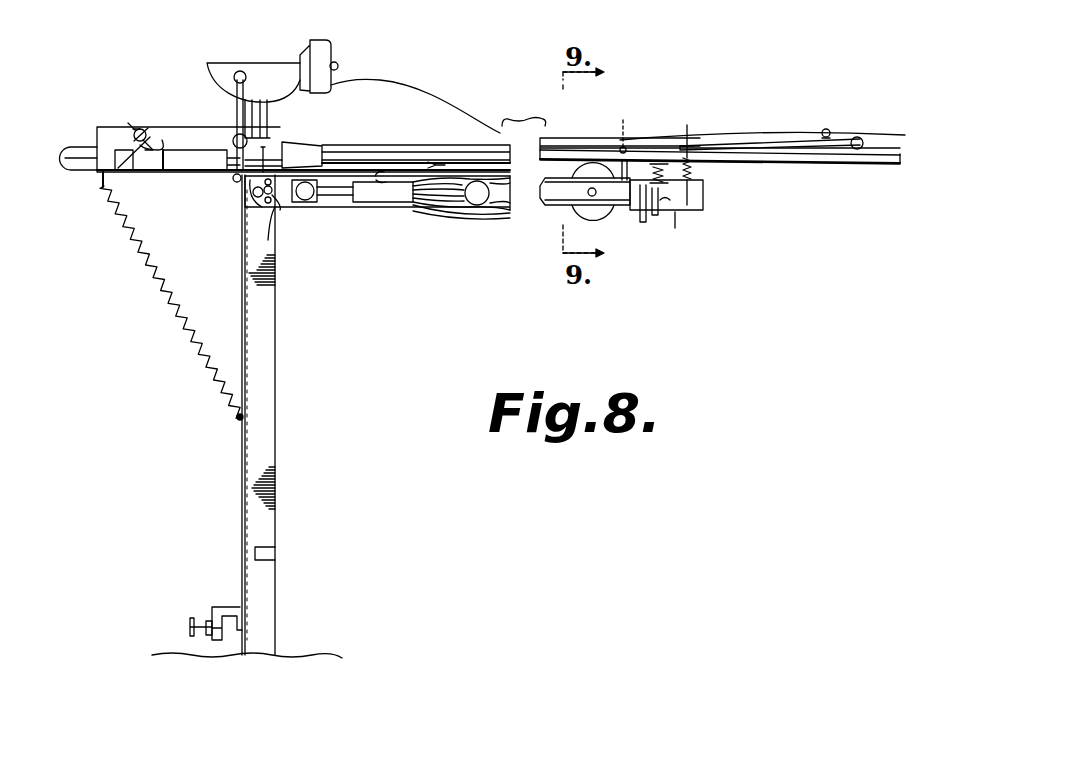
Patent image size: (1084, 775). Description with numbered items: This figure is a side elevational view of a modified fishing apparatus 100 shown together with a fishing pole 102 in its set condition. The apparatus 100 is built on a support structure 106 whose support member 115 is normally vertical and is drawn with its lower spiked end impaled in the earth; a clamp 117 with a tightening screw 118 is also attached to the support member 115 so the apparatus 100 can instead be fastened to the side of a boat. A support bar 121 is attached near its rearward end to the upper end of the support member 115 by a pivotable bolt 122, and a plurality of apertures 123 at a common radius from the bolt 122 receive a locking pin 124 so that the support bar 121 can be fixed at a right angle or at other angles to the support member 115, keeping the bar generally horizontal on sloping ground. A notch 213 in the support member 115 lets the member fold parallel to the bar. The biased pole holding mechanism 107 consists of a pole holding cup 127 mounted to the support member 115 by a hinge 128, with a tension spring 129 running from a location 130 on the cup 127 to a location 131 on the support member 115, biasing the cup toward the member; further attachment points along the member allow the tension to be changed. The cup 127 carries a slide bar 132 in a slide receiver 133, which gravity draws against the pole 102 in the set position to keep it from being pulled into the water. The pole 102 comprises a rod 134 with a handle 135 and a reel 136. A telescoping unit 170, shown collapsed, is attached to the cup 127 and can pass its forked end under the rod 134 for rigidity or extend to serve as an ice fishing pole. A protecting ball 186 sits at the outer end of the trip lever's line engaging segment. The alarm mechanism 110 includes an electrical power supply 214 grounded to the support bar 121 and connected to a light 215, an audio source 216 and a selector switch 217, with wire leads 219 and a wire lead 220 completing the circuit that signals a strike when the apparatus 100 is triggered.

The fishing apparatus 100 is at (358, 313).
The fishing pole 102 is at (408, 145).
The support structure 106 is at (277, 405).
The biased pole holding mechanism 107 is at (97, 263).
The alarm mechanism 110 is at (387, 250).
The support member 115 is at (277, 322).
The clamp 117 is at (222, 606).
The tightening screw 118 is at (190, 628).
The support bar 121 is at (410, 205).
The pivotable bolt 122 is at (245, 192).
The apertures 123 is at (264, 145).
The locking pin 124 is at (276, 205).
The pole holding cup 127 is at (100, 125).
The hinge 128 is at (234, 180).
The tension spring 129 is at (160, 300).
The spring attachment location on cup 130 is at (97, 172).
The spring attachment location on support member 131 is at (236, 420).
The slide bar 132 is at (152, 127).
The slide receiver 133 is at (119, 170).
The rod 134 is at (342, 145).
The handle 135 is at (70, 147).
The reel 136 is at (263, 62).
The telescoping unit 170 is at (204, 150).
The protecting ball 186 is at (862, 140).
The notch 213 is at (268, 552).
The electrical power supply 214 is at (385, 204).
The light 215 is at (476, 200).
The audio source 216 is at (305, 204).
The switch 217 is at (432, 165).
The wire leads 219 is at (510, 208).
The wire lead 220 is at (575, 178).